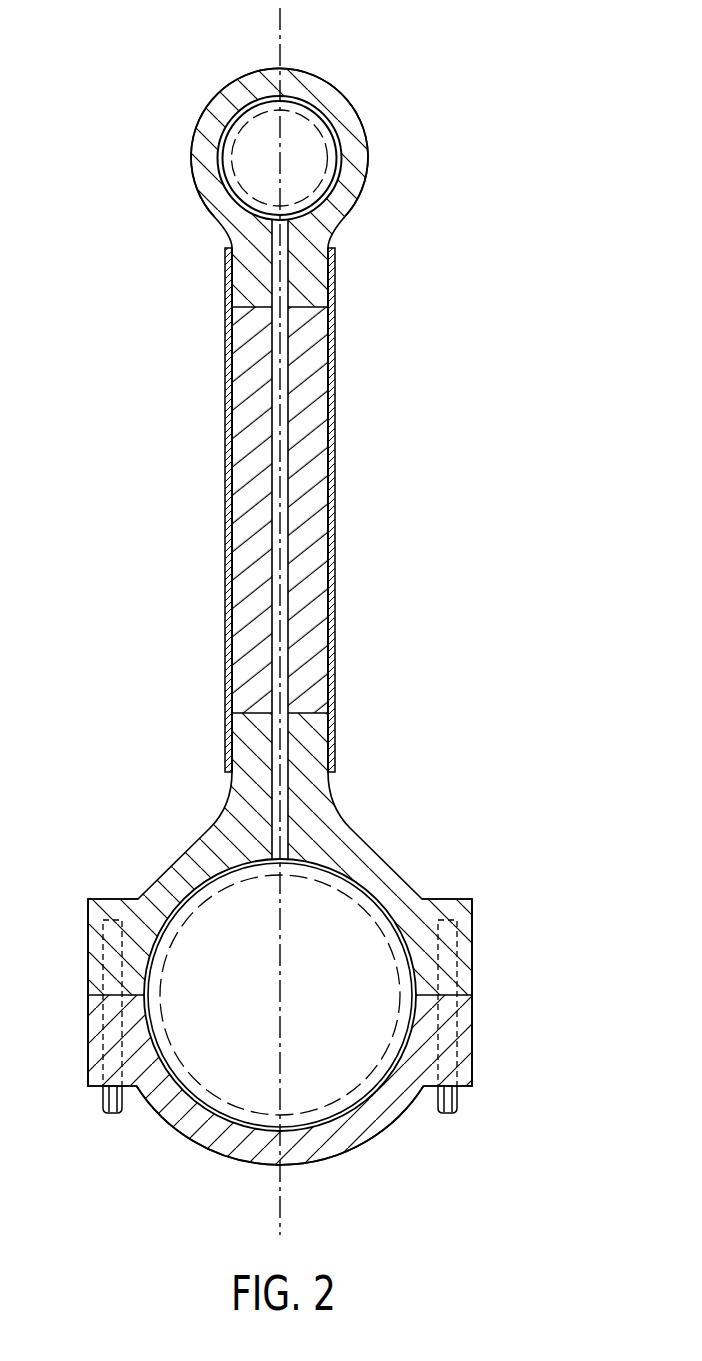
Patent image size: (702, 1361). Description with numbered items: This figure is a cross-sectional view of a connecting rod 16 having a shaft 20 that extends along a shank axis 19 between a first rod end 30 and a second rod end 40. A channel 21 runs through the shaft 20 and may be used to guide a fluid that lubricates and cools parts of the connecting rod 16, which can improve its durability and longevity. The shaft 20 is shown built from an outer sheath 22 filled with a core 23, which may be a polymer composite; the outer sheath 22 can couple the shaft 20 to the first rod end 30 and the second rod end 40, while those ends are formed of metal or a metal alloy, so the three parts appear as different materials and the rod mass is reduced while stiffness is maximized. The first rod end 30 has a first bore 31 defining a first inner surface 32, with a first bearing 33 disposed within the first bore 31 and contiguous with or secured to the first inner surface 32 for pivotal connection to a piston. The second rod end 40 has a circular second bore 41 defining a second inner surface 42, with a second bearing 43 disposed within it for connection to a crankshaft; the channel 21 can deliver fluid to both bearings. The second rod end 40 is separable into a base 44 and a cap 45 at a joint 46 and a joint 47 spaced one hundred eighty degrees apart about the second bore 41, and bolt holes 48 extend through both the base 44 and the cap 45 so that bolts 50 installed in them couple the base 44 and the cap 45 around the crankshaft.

The connecting rod 16 is at (462, 361).
The shank axis 19 is at (283, 42).
The shaft 20 is at (201, 509).
The channel 21 is at (284, 641).
The outer sheath 22 is at (333, 452).
The core 23 is at (317, 522).
The first rod end 30 is at (403, 165).
The first bore 31 is at (300, 153).
The first inner surface 32 is at (213, 173).
The first bearing 33 is at (250, 110).
The second rod end 40 is at (524, 902).
The second bore 41 is at (240, 993).
The second inner surface 42 is at (138, 897).
The second bearing 43 is at (383, 895).
The base 44 is at (463, 963).
The cap 45 is at (463, 1055).
The joint 46 is at (463, 995).
The joint 47 is at (87, 995).
The bolt hole 48 is at (86, 1055).
The bolt 50 is at (102, 1106).